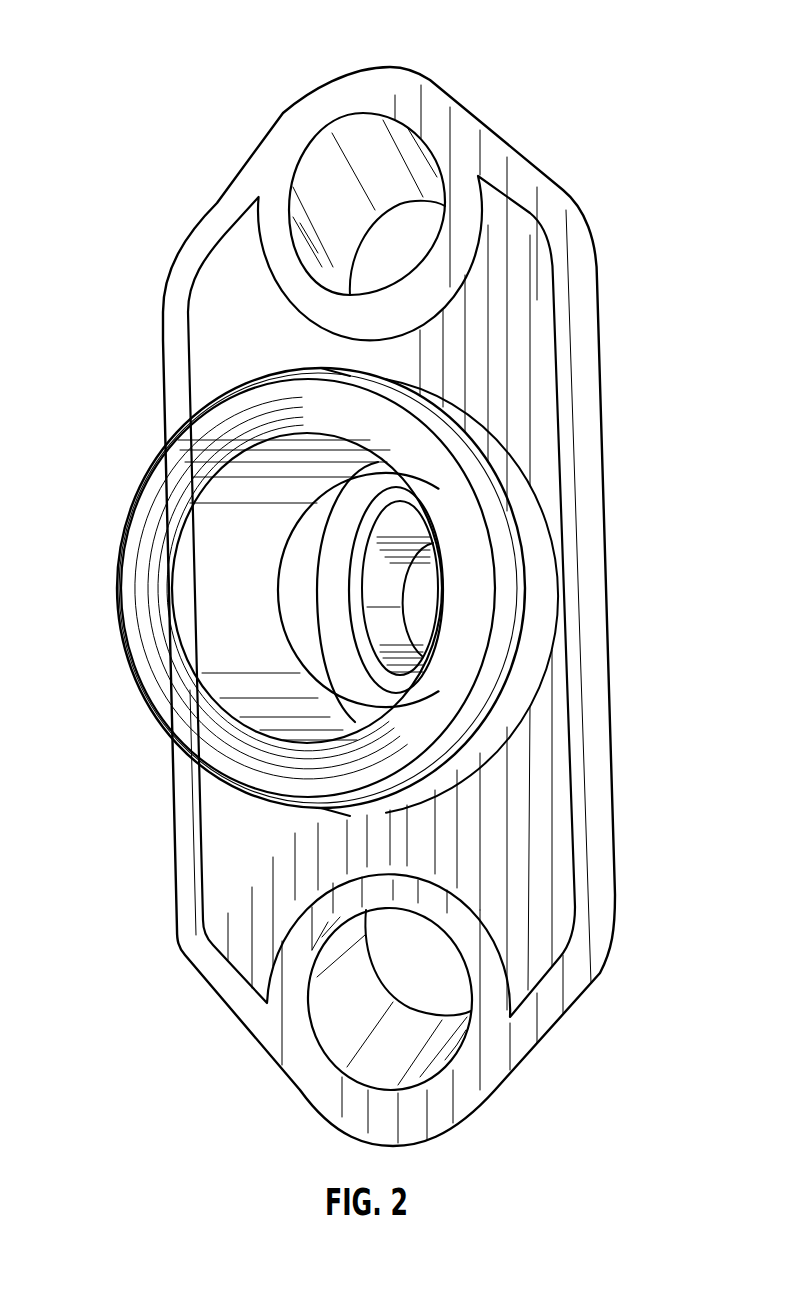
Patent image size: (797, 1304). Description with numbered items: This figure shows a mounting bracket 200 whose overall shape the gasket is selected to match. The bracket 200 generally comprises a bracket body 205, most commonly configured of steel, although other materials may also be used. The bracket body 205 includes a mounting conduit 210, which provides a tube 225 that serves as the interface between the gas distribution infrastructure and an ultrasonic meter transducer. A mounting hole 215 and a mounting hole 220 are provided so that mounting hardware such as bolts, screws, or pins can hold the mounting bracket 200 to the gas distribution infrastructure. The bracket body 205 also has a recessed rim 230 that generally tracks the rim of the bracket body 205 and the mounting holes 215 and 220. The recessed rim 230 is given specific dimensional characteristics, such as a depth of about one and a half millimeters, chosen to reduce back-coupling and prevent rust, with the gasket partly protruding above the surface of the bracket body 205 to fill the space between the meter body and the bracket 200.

The bracket 200 is at (178, 53).
The bracket body 205 is at (500, 360).
The mounting conduit 210 is at (480, 571).
The mounting hole 215 is at (350, 172).
The mounting hole 220 is at (356, 1009).
The tube 225 is at (303, 580).
The recessed rim 230 is at (562, 994).